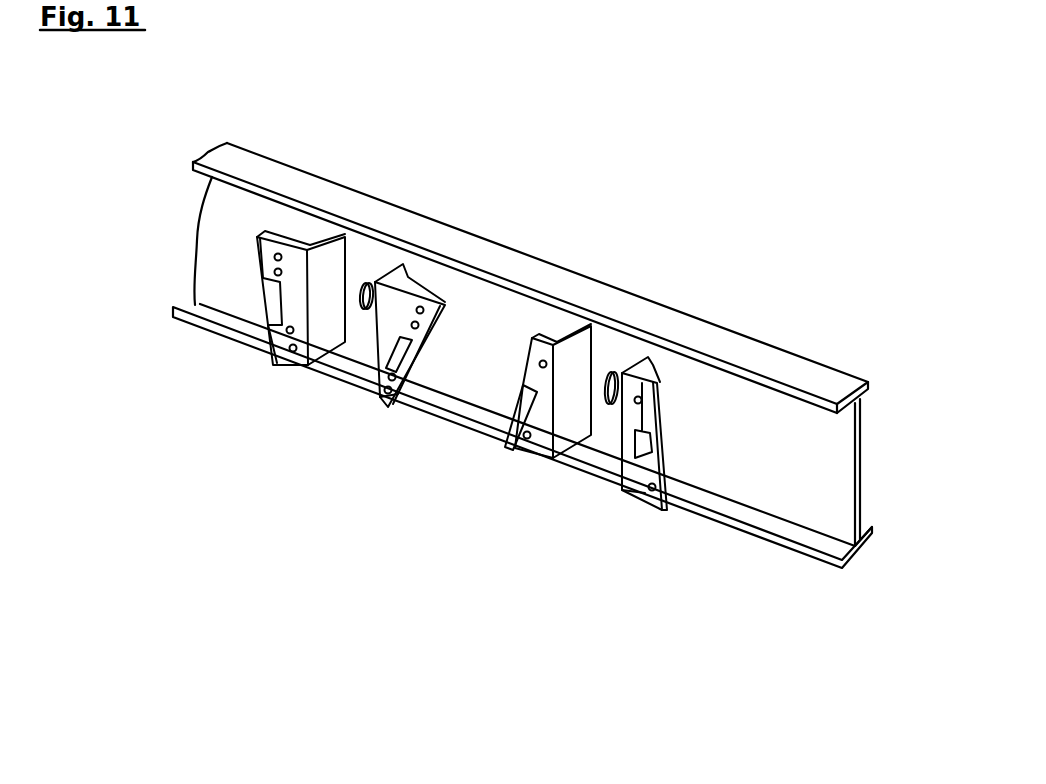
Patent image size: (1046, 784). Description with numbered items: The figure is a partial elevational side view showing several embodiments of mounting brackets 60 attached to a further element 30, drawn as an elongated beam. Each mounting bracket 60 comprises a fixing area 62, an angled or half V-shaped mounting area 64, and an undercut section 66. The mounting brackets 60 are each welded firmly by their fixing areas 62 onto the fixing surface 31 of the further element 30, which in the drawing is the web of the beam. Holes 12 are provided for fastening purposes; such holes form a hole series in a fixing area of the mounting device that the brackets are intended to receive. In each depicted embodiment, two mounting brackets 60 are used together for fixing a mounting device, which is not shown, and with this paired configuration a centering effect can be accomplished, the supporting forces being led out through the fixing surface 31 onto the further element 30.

The hole 12 is at (370, 280).
The further element 30 is at (808, 341).
The fixing surface 31 is at (470, 368).
The mounting bracket 60 is at (447, 343).
The fixing area 62 is at (350, 270).
The mounting area 64 is at (545, 397).
The undercut section 66 is at (280, 273).